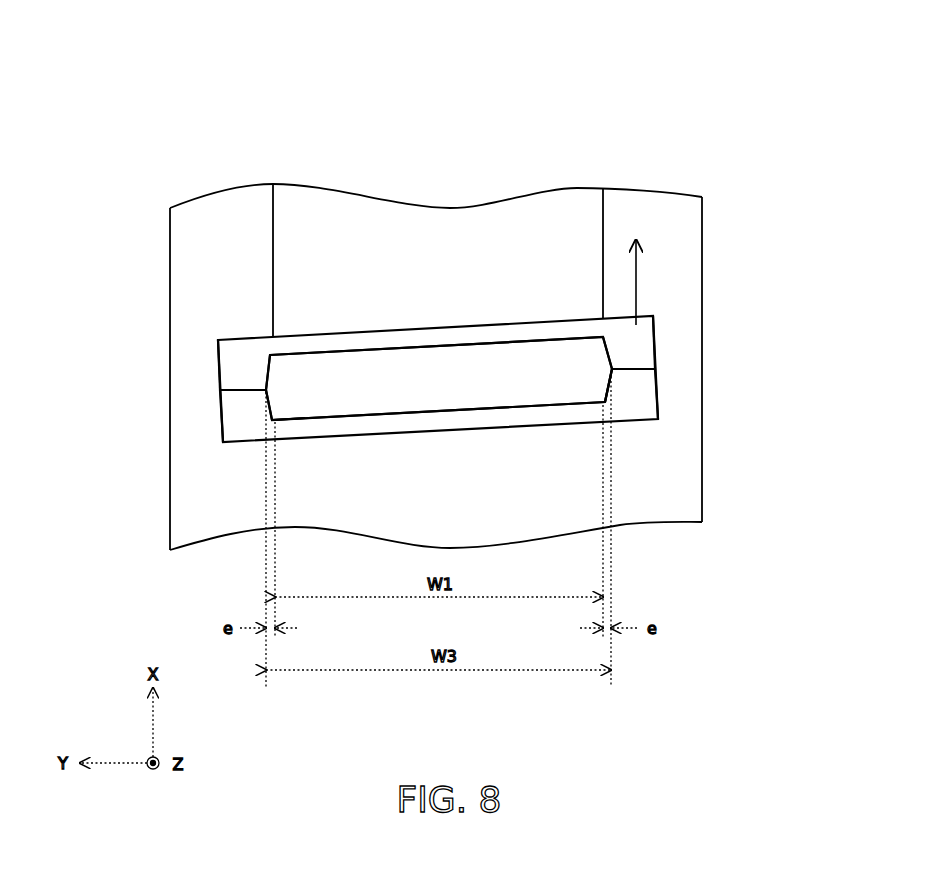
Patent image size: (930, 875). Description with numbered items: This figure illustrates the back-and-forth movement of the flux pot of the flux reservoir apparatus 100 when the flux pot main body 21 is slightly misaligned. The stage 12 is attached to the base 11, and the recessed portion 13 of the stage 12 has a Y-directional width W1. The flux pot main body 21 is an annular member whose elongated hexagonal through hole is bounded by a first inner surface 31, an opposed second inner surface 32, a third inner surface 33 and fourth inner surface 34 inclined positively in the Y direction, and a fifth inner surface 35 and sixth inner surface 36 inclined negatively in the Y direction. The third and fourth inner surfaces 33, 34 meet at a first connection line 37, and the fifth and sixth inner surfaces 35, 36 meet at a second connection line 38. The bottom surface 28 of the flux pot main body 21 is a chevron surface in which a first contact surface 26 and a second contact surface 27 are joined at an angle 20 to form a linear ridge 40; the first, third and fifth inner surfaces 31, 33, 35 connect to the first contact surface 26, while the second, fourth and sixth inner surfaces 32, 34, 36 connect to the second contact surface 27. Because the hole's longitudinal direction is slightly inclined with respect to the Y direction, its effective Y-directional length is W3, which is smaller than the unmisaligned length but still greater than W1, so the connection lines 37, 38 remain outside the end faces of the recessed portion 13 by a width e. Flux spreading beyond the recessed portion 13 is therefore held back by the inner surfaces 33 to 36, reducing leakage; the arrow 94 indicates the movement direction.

The flux reservoir apparatus 100 is at (218, 100).
The base 11 is at (600, 222).
The stage 12 is at (702, 210).
The recessed portion 13 is at (283, 383).
The angle 20 is at (662, 323).
The flux pot main body 21 is at (630, 425).
The first contact surface 26 is at (655, 405).
The second contact surface 27 is at (660, 316).
The bottom surface 28 is at (265, 388).
The first inner surface 31 is at (475, 405).
The second inner surface 32 is at (450, 348).
The third inner surface 33 is at (300, 420).
The fourth inner surface 34 is at (275, 370).
The fifth inner surface 35 is at (610, 367).
The sixth inner surface 36 is at (600, 362).
The first connection line 37 is at (235, 372).
The second connection line 38 is at (610, 370).
The linear ridge 40 is at (250, 385).
The insertion direction 94 is at (640, 262).